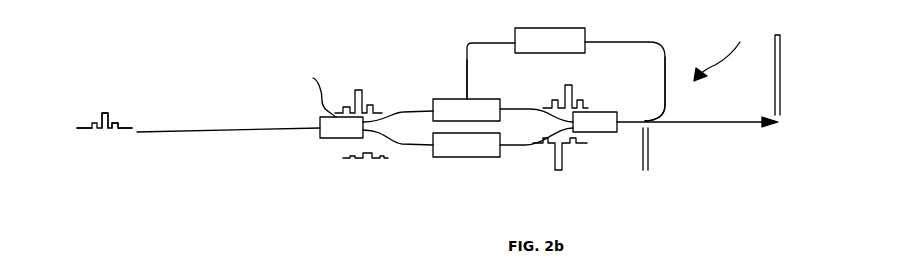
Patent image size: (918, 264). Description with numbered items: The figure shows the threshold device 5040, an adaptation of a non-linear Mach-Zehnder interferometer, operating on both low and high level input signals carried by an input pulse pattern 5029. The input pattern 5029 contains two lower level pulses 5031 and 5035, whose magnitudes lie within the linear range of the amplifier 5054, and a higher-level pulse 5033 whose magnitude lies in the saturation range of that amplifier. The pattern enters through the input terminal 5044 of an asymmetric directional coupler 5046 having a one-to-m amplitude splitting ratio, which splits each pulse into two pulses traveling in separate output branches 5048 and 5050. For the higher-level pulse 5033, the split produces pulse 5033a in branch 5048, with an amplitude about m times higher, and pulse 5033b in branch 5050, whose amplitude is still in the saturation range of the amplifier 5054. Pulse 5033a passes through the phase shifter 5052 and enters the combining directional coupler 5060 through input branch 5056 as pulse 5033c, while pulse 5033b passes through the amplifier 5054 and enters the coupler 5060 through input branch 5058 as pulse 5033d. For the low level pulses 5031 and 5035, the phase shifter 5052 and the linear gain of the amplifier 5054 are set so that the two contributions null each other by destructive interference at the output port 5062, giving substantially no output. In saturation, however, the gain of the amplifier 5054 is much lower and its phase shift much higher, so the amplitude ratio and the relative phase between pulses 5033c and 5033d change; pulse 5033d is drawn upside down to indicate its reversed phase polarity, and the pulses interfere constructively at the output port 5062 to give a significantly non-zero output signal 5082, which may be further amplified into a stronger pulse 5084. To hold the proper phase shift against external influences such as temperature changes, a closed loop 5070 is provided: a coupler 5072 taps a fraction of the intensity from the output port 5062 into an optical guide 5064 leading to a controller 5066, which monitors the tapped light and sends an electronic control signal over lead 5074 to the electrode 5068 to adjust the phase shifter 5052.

The input pulse pattern 5029 is at (102, 130).
The lower level pulse 5031 is at (88, 128).
The higher-level pulse 5033 is at (127, 97).
The lower level pulse 5035 is at (118, 126).
The input terminal 5044 is at (235, 132).
The asymmetric directional coupler 5046 is at (348, 138).
The split pulse 5033a is at (343, 103).
The split pulse 5033b is at (365, 162).
The output branch 5048 is at (388, 98).
The output branch 5050 is at (403, 146).
The phase shifter 5052 is at (452, 98).
The amplifier 5054 is at (470, 157).
The input branch 5056 is at (517, 106).
The input branch 5058 is at (515, 147).
The phase-shifted pulse 5033c is at (582, 87).
The amplified pulse 5033d is at (563, 172).
The directional coupler 5060 is at (605, 133).
The output port 5062 is at (670, 123).
The optical guide 5064 is at (665, 80).
The controller 5066 is at (585, 48).
The electrode 5068 is at (467, 96).
The closed loop 5070 is at (650, 40).
The coupler 5072 is at (665, 115).
The lead 5074 is at (468, 43).
The threshold device 5040 is at (732, 53).
The output signal 5082 is at (650, 162).
The amplified output pulse 5084 is at (782, 87).